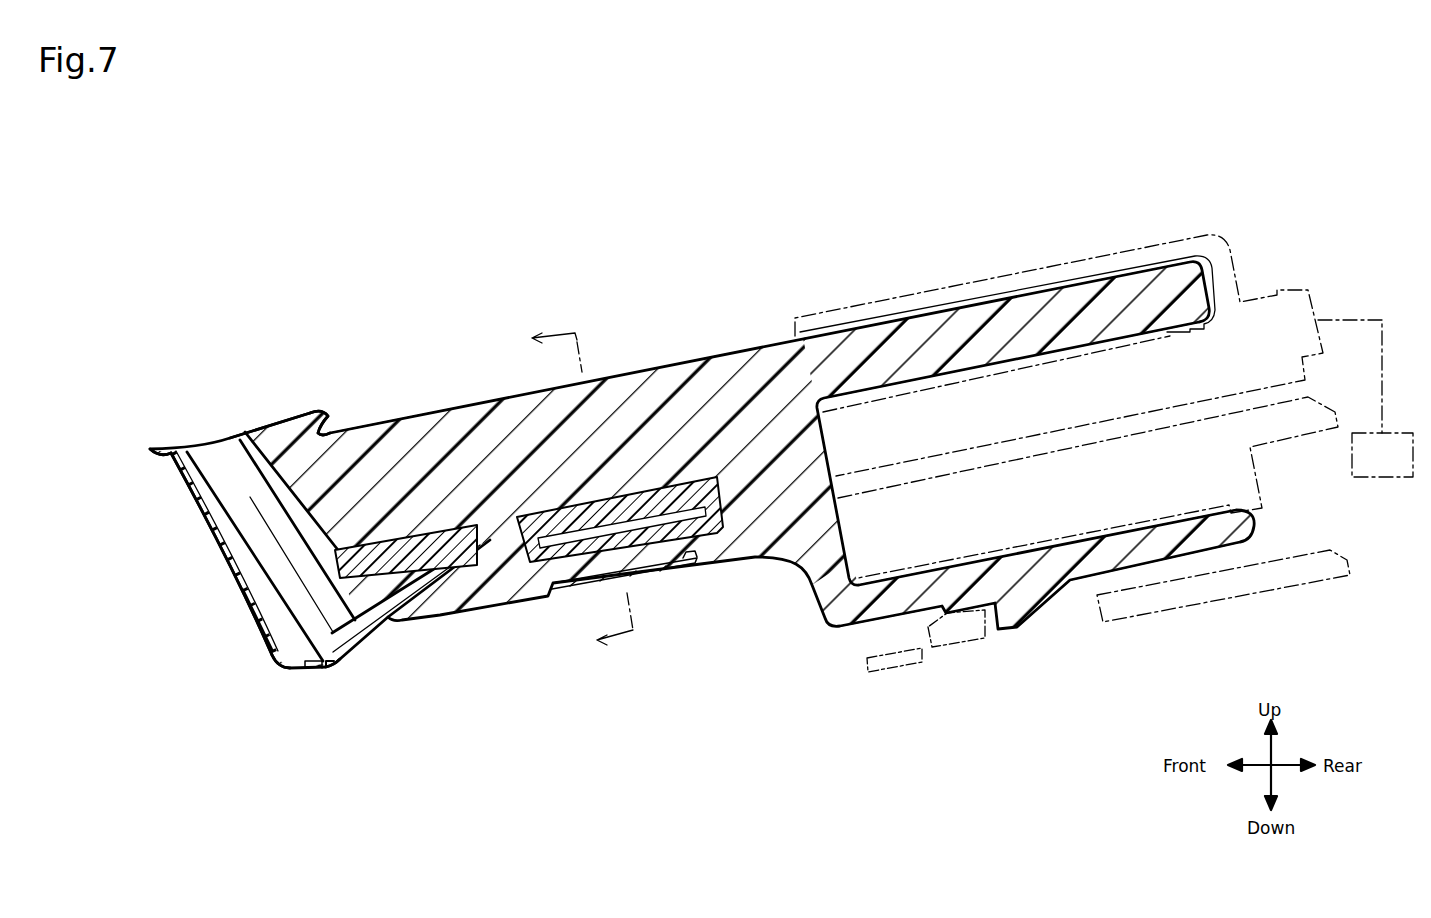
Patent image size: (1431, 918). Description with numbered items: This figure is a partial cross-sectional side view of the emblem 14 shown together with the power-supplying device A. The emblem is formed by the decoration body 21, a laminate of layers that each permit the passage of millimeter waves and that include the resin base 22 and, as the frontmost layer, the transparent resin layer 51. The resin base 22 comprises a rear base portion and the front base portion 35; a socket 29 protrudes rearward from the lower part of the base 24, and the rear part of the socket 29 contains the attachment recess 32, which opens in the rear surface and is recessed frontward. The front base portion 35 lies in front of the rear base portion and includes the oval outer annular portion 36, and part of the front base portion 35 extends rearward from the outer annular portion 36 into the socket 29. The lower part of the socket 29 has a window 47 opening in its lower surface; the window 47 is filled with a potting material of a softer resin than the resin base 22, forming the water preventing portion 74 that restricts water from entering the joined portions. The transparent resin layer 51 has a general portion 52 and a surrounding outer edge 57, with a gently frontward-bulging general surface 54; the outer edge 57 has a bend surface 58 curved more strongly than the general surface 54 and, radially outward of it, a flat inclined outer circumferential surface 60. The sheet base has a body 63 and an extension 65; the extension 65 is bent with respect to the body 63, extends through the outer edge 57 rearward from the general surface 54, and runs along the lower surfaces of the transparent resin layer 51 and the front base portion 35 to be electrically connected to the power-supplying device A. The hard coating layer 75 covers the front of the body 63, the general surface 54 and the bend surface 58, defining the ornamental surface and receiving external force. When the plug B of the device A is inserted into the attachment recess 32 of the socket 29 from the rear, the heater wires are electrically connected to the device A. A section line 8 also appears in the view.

The emblem 14 is at (210, 700).
The decoration body 21 is at (312, 341).
The resin base 22 is at (284, 430).
The base 24 is at (320, 430).
The socket 29 is at (665, 383).
The attachment recess 32 is at (1167, 330).
The front base portion 35 is at (465, 560).
The outer annular portion 36 is at (365, 620).
The window 47 is at (685, 568).
The transparent resin layer 51 is at (213, 452).
The general portion 52 is at (213, 488).
The general surface 54 is at (177, 450).
The outer edge 57 is at (314, 666).
The bend surface 58 is at (293, 665).
The outer circumferential surface 60 is at (330, 668).
The body 63 is at (200, 520).
The extension 65 is at (305, 665).
The water preventing portion 74 is at (652, 566).
The hard coating layer 75 is at (262, 628).
The section line VIII-VIII 8 is at (570, 499).
The power-supplying device A is at (1378, 477).
The plug B is at (1278, 292).